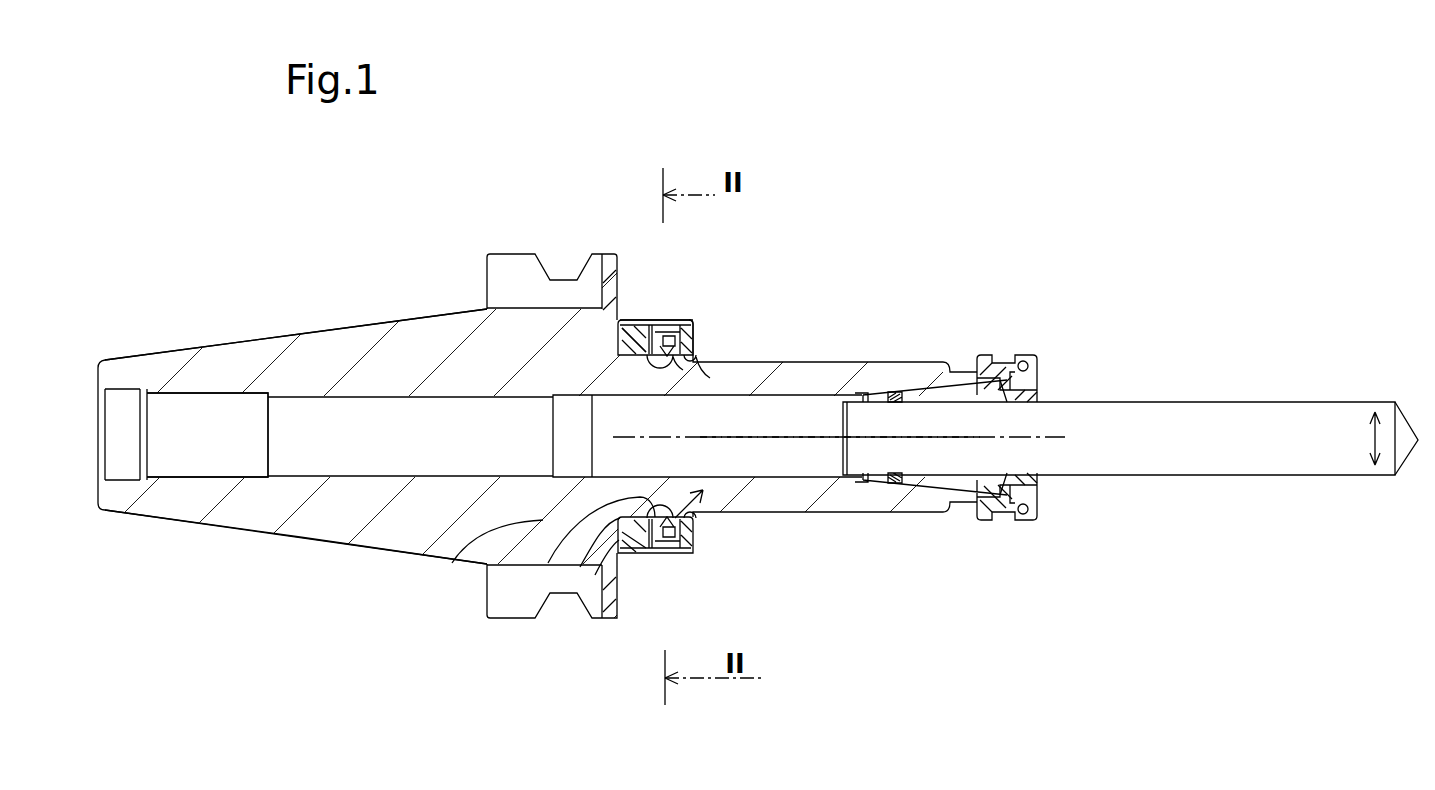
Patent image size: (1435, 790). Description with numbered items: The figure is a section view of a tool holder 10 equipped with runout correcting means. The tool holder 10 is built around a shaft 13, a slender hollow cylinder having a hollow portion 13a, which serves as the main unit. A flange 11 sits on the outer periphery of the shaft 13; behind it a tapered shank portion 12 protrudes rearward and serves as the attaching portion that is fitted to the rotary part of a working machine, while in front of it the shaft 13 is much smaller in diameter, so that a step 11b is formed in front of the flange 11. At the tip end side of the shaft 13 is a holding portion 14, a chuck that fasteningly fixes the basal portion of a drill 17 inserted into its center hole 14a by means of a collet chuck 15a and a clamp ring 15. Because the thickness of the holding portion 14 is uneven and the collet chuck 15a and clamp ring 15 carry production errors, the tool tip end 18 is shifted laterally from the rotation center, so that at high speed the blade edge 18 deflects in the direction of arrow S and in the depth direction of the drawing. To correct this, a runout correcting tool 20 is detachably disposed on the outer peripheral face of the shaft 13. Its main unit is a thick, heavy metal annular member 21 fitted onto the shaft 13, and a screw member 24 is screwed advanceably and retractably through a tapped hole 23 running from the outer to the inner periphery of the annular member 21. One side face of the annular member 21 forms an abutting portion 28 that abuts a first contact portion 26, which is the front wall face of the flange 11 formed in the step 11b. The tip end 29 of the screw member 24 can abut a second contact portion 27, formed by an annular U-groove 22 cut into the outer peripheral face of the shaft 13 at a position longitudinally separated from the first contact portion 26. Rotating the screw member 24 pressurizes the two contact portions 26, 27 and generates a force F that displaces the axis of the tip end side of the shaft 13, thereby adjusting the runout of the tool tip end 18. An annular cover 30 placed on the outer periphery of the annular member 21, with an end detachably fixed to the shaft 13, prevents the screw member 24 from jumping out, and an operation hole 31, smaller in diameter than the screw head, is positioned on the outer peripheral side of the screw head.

The tool holder 10 is at (826, 326).
The flange 11 is at (502, 270).
The step 11b is at (580, 567).
The tapered shank portion 12 is at (318, 327).
The shaft 13 is at (472, 497).
The hollow portion 13a is at (487, 448).
The holding portion 14 is at (1024, 318).
The center hole 14a is at (970, 400).
The clamp ring 15 is at (1028, 500).
The collet chuck 15a is at (963, 478).
The drill 17 is at (1288, 453).
The tool tip end 18 is at (1422, 441).
The runout correcting tool 20 is at (706, 313).
The annular member 21 is at (595, 575).
The annular U-groove 22 is at (537, 563).
The tapped hole 23 is at (694, 337).
The screw member 24 is at (665, 350).
The first contact portion 26 is at (617, 343).
The second contact portion 27 is at (680, 384).
The abutting portion 28 is at (640, 320).
The tip end of screw member 29 is at (668, 377).
The annular cover 30 is at (637, 553).
The operation hole 31 is at (665, 553).
The arrow S is at (1372, 445).
The force F is at (693, 523).